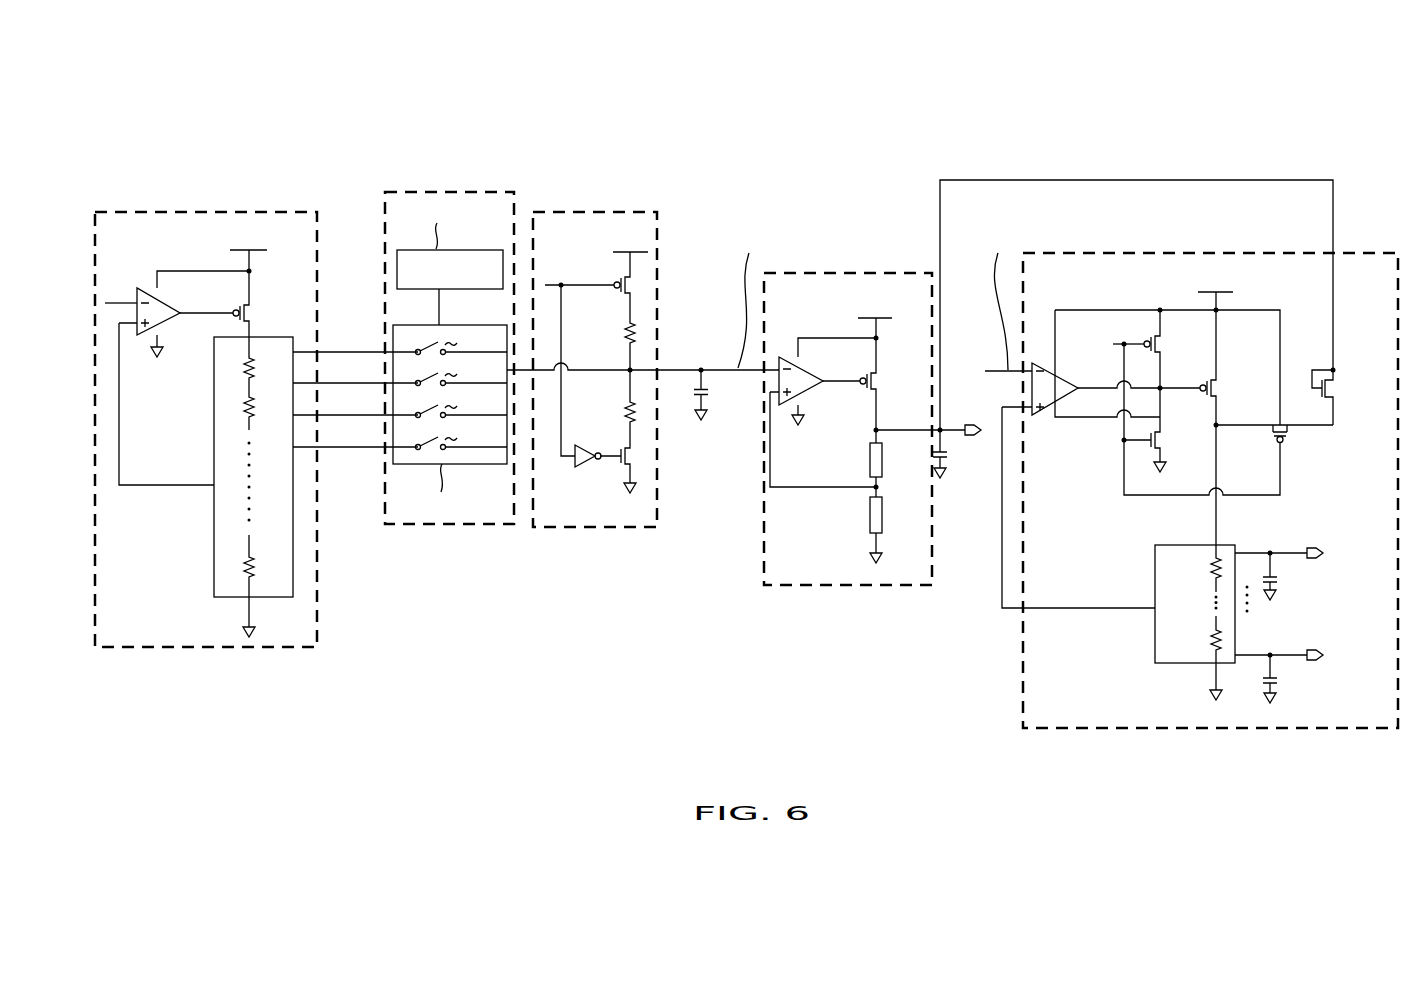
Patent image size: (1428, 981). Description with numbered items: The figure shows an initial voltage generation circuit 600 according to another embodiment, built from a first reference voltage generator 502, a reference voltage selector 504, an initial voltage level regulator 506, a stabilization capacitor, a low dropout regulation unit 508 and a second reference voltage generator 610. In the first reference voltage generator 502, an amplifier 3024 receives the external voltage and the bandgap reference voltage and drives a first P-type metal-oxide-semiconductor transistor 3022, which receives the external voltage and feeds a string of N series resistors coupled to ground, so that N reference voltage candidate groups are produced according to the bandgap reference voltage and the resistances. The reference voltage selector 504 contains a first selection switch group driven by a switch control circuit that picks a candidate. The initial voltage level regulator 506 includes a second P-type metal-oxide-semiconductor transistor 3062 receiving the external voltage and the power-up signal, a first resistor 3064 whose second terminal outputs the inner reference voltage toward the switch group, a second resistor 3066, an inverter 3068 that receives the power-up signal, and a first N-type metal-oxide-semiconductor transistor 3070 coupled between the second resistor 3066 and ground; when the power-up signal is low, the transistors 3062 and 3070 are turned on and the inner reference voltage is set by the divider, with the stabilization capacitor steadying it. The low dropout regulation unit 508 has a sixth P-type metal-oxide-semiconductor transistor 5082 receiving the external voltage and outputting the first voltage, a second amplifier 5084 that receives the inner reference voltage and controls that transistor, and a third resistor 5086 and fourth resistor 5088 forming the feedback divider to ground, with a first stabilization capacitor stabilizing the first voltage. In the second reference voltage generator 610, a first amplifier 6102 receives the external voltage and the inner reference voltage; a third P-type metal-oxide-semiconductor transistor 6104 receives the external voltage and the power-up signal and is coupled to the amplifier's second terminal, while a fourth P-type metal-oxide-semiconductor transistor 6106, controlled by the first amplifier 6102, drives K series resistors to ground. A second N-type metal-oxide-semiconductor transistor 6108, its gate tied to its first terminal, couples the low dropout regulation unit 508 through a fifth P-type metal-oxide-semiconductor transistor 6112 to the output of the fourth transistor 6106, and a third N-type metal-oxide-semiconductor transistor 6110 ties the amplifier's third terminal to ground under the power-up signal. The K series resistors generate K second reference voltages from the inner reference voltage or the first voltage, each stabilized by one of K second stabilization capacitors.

The initial voltage generation circuit 600 is at (746, 379).
The first reference voltage generator 502 is at (205, 210).
The reference voltage selector 504 is at (461, 192).
The initial voltage level regulator 506 is at (576, 210).
The low dropout regulation unit 508 is at (828, 272).
The second reference voltage generator 610 is at (1228, 251).
The amplifier 3024 is at (177, 289).
The first P-type metal-oxide-semiconductor transistor 3022 is at (253, 313).
The second P-type metal-oxide-semiconductor transistor 3062 is at (634, 288).
The first resistor 3064 is at (620, 333).
The second resistor 3066 is at (622, 413).
The inverter 3068 is at (564, 462).
The first N-type metal-oxide-semiconductor transistor 3070 is at (634, 455).
The sixth P-type metal-oxide-semiconductor transistor 5082 is at (877, 382).
The second amplifier 5084 is at (805, 392).
The third resistor 5086 is at (870, 452).
The fourth resistor 5088 is at (870, 505).
The first amplifier 6102 is at (1048, 411).
The third P-type metal-oxide-semiconductor transistor 6104 is at (1182, 338).
The fourth P-type metal-oxide-semiconductor transistor 6106 is at (1237, 382).
The second N-type metal-oxide-semiconductor transistor 6108 is at (1337, 388).
The third N-type metal-oxide-semiconductor transistor 6110 is at (1182, 428).
The fifth P-type metal-oxide-semiconductor transistor 6112 is at (1292, 437).